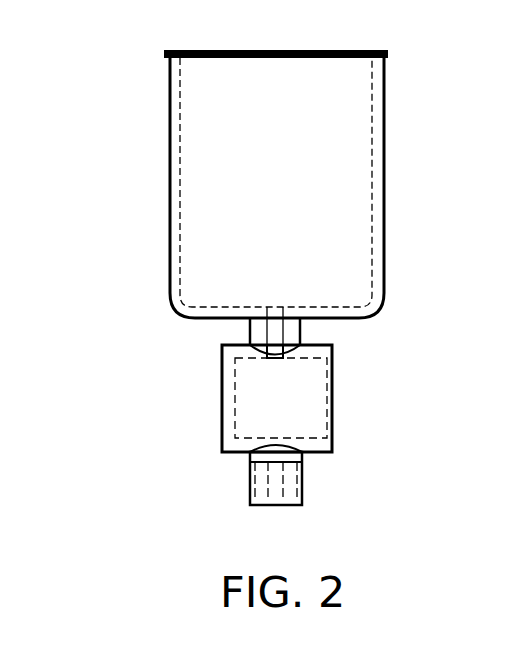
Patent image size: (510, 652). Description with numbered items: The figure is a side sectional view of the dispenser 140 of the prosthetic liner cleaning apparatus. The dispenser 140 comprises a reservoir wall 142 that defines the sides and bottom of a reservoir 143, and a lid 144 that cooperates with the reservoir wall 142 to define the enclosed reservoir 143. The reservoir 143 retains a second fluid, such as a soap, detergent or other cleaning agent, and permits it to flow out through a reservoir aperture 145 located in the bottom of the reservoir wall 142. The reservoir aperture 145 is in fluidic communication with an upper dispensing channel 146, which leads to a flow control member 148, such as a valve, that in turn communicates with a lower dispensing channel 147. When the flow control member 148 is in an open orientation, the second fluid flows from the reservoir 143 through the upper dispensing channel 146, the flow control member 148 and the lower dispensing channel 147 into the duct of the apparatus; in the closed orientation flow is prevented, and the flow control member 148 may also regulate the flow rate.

The dispenser 140 is at (67, 42).
The reservoir wall 142 is at (168, 212).
The reservoir 143 is at (195, 293).
The lid 144 is at (247, 58).
The reservoir aperture 145 is at (283, 302).
The upper dispensing channel 146 is at (302, 328).
The lower dispensing channel 147 is at (250, 497).
The flow control member 148 is at (235, 393).